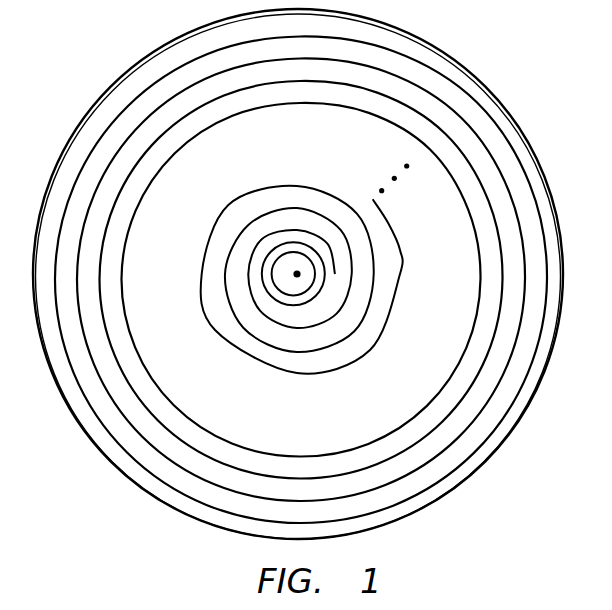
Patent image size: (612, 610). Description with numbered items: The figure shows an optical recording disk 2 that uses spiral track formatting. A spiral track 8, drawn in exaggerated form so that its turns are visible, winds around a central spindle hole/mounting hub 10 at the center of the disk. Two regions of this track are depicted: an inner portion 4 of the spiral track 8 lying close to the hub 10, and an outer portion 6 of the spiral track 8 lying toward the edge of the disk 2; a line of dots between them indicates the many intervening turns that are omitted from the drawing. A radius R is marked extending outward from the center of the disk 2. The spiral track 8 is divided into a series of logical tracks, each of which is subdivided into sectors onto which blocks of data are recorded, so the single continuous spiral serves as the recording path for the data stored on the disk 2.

The optical recording disk 2 is at (483, 85).
The inner portion of the spiral track 4 is at (183, 273).
The outer portion of the spiral track 6 is at (79, 371).
The spiral track 8 is at (401, 288).
The central spindle hole/mounting hub 10 is at (297, 277).
The radius R is at (166, 139).